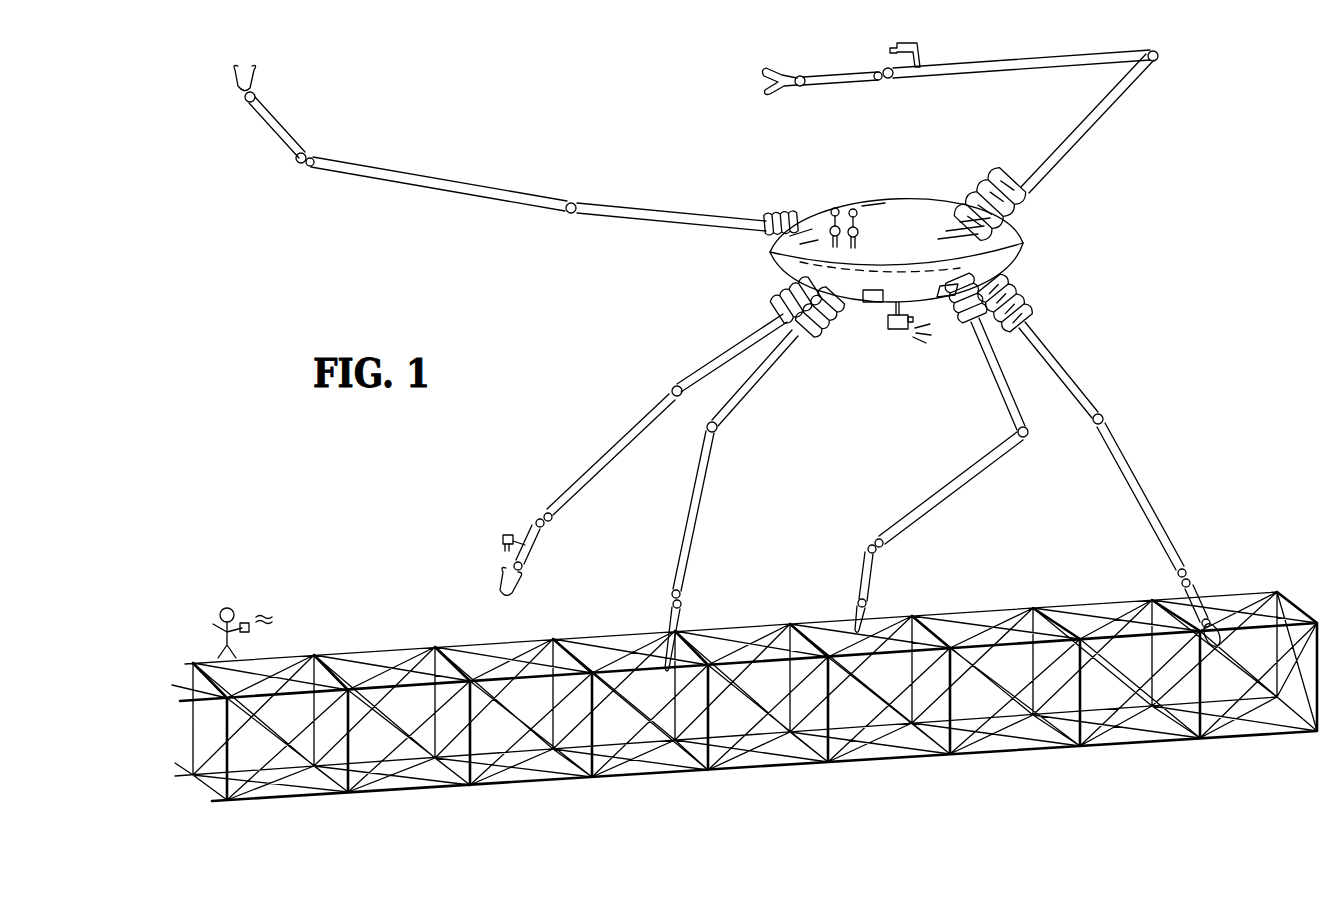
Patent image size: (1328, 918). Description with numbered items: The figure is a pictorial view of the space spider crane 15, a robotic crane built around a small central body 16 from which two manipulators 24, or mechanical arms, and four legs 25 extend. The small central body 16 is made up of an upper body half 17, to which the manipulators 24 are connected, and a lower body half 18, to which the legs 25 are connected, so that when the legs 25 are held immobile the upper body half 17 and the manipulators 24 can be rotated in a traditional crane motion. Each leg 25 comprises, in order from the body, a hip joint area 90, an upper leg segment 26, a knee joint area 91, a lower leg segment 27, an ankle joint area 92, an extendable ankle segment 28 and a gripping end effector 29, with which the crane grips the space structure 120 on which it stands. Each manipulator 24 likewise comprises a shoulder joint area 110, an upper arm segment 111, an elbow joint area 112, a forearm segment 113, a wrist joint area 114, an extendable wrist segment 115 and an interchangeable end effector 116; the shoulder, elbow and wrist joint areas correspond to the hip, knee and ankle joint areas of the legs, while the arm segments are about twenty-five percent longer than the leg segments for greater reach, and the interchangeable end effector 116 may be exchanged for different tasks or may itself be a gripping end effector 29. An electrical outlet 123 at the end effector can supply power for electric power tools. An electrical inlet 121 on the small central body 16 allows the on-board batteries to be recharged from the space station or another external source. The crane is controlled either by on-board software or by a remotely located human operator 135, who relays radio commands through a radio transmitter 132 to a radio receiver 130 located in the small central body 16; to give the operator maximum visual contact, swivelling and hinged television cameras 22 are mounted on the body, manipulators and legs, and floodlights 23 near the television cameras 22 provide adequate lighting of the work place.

The space spider crane 15 is at (1118, 318).
The small central body 16 is at (775, 262).
The upper body half 17 is at (930, 205).
The lower body half 18 is at (1023, 258).
The television cameras 22 is at (862, 226).
The floodlights 23 is at (845, 208).
The manipulators 24 is at (460, 196).
The legs 25 is at (592, 465).
The upper leg segment 26 is at (1090, 375).
The lower leg segment 27 is at (1163, 510).
The extendable ankle segment 28 is at (875, 580).
The gripping end effector 29 is at (524, 590).
The hip joint area 90 is at (1025, 295).
The knee joint area 91 is at (1110, 416).
The ankle joint area 92 is at (1177, 580).
The shoulder joint area 110 is at (786, 215).
The upper arm segment 111 is at (650, 209).
The elbow joint area 112 is at (570, 200).
The forearm segment 113 is at (420, 172).
The wrist joint area 114 is at (308, 170).
The extendable wrist segment 115 is at (282, 126).
The interchangeable end effector 116 is at (232, 84).
The space structure 120 is at (365, 650).
The electrical inlet 121 is at (947, 297).
The electrical outlet 123 is at (792, 88).
The radio receiver 130 is at (884, 300).
The radio transmitter 132 is at (250, 616).
The human operator 135 is at (224, 608).